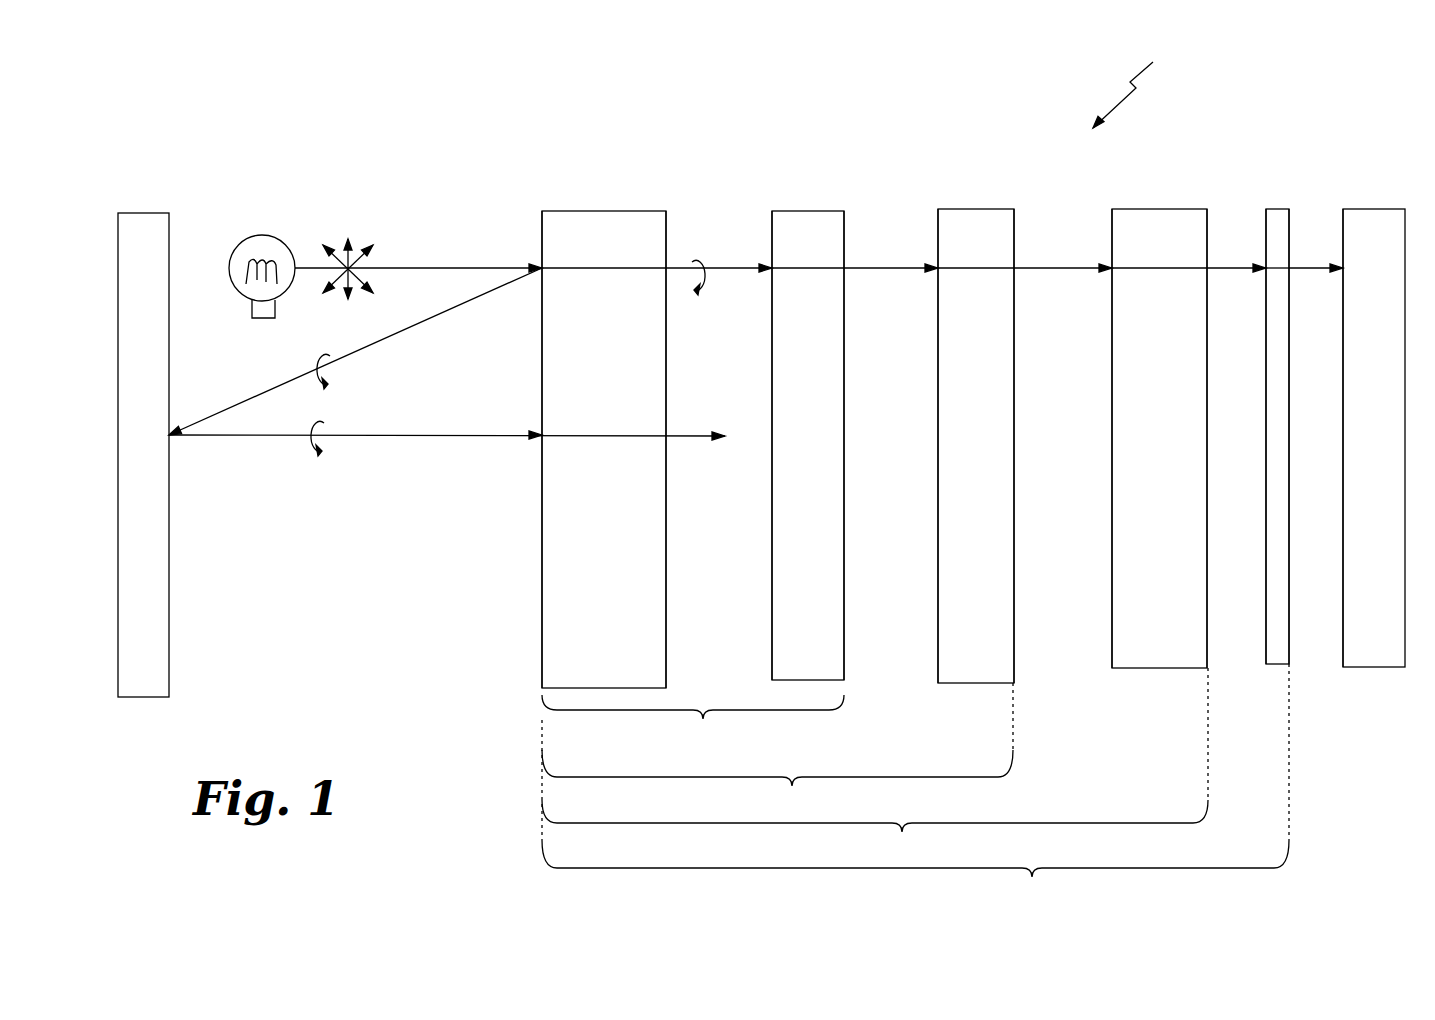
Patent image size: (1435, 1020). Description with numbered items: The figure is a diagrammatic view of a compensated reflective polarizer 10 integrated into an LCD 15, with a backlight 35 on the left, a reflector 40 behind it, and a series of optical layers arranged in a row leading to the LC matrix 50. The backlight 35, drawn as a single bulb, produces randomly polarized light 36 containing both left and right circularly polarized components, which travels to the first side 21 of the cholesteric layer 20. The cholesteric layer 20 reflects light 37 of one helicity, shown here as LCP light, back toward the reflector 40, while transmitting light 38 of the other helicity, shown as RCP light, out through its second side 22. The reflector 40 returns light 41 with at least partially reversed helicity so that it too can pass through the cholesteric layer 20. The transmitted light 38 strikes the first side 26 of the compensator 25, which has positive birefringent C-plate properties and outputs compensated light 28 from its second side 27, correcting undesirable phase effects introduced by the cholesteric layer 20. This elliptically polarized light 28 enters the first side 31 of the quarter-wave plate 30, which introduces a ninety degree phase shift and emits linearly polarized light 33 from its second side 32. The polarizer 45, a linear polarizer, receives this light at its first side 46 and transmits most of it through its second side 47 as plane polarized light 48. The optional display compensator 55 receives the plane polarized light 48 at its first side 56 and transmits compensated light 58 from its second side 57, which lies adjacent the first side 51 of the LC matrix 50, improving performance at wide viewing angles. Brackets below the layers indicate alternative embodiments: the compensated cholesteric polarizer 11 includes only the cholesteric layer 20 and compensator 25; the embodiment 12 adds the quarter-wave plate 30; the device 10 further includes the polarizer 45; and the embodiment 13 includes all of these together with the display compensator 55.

The compensated reflective polarizer 10 is at (875, 829).
The compensated cholesteric polarizer 11 is at (693, 724).
The compensated cholesteric polarizer with quarter-wave plate 12 is at (777, 781).
The fully compensated reflective polarizer 13 is at (915, 874).
The LCD 15 is at (1139, 85).
The cholesteric layer 20 is at (604, 415).
The first side of cholesteric layer 21 is at (489, 449).
The second side of cholesteric layer 22 is at (698, 449).
The compensator 25 is at (815, 411).
The first side of compensator 26 is at (734, 445).
The second side of compensator 27 is at (876, 445).
The compensated light 28 is at (786, 232).
The quarter-wave plate 30 is at (978, 418).
The first side of quarter-wave plate 31 is at (900, 446).
The second side of quarter-wave plate 32 is at (1046, 446).
The linearly polarized light 33 is at (961, 225).
The backlight 35 is at (264, 250).
The randomly polarized light 36 is at (418, 231).
The reflected light 37 is at (355, 351).
The transmitted light 38 is at (698, 240).
The reflector 40 is at (156, 414).
The reflected reversed-helicity light 41 is at (447, 461).
The polarizer 45 is at (1159, 405).
The first side of polarizer 46 is at (1075, 438).
The second side of polarizer 47 is at (1230, 438).
The plane polarized light 48 is at (1140, 227).
The LC matrix 50 is at (1380, 412).
The first side of LC matrix 51 is at (1326, 457).
The display compensator 55 is at (1295, 411).
The first side of display compensator 56 is at (1238, 436).
The second side of display compensator 57 is at (1313, 436).
The compensated output light 58 is at (1316, 247).